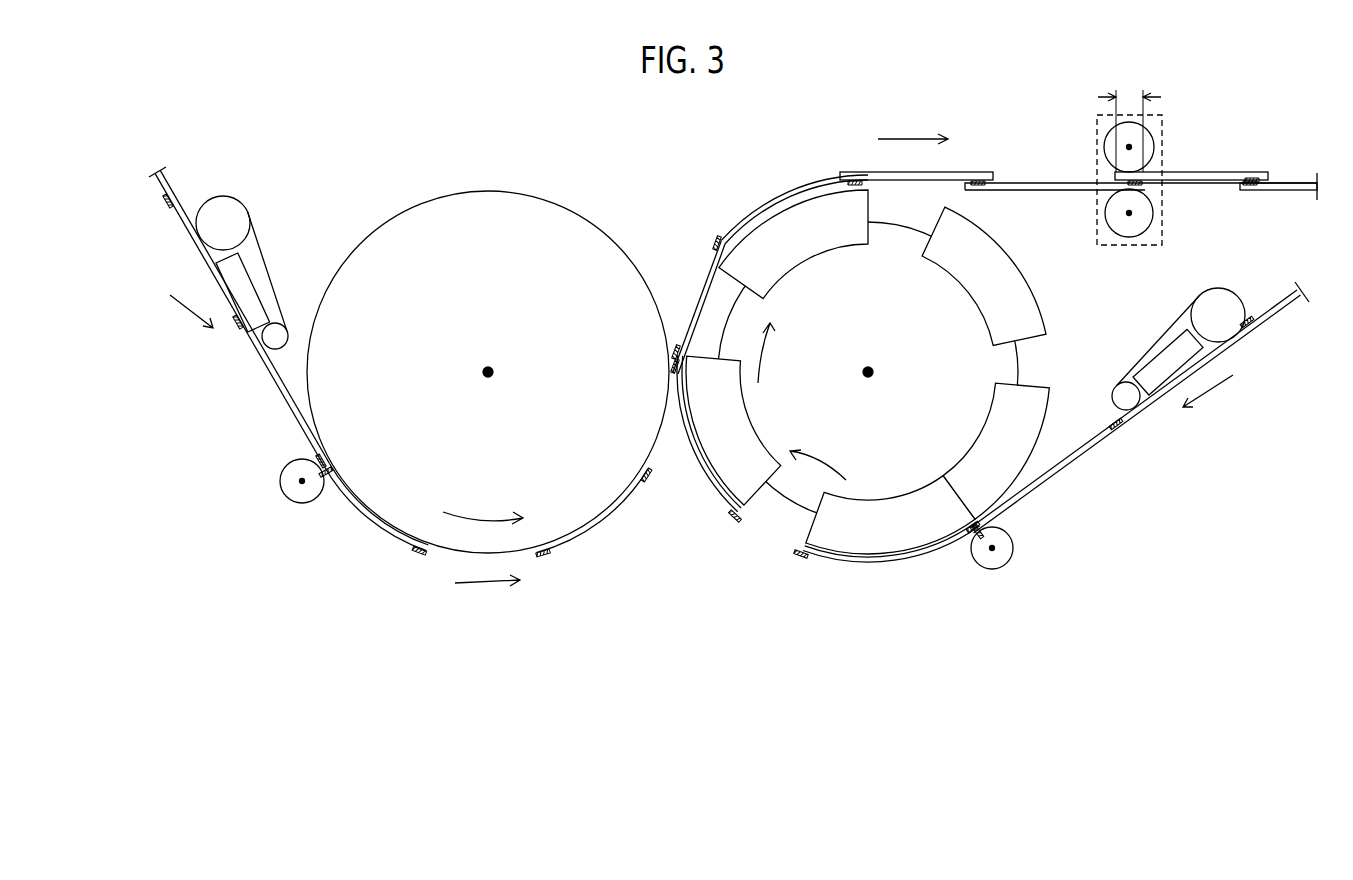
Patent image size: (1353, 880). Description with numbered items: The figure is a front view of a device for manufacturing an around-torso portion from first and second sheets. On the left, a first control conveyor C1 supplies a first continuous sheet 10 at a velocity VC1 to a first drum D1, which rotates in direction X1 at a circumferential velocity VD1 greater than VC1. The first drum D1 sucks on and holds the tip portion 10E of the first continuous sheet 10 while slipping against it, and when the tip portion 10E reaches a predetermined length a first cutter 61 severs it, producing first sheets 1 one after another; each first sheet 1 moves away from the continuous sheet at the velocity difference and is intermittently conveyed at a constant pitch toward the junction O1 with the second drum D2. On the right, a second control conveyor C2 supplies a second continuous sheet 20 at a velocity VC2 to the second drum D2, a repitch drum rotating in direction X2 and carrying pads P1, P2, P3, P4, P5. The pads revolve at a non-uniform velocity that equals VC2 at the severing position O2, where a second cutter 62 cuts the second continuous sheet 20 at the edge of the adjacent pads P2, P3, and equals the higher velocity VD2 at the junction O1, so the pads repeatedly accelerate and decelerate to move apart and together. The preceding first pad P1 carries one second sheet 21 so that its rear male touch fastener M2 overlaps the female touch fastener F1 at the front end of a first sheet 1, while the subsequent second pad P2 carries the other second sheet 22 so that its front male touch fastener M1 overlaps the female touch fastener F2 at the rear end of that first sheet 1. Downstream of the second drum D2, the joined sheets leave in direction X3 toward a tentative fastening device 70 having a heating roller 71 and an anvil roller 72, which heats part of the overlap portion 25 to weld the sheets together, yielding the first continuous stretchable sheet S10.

The first sheet 1 is at (607, 522).
The first continuous sheet 10 is at (287, 405).
The tip portion 10E is at (365, 518).
The first cutter 61 is at (296, 492).
The second cutter 62 is at (1003, 556).
The second continuous sheet 20 is at (1067, 465).
The one second sheet 21 is at (705, 470).
The other second sheet 22 is at (900, 557).
The tentative fastening device 70 is at (1095, 125).
The heating roller 71 is at (1105, 147).
The anvil roller 72 is at (1153, 213).
The overlap portion 25 is at (1130, 90).
The first drum D1 is at (510, 220).
The second drum D2 is at (1020, 367).
The first control conveyor C1 is at (263, 257).
The second control conveyor C2 is at (1167, 330).
The first pad P1 is at (735, 397).
The second pad P2 is at (892, 503).
The pad P3 is at (1002, 405).
The pad P4 is at (982, 300).
The pad P5 is at (810, 252).
The female touch fastener F1 is at (648, 475).
The female touch fastener F2 is at (550, 553).
The male touch fastener M1 is at (812, 557).
The male touch fastener M2 is at (740, 513).
The junction O1 is at (668, 362).
The severing position O2 is at (975, 518).
The first continuous stretchable sheet S10 is at (1234, 138).
The rotation direction of first drum X1 is at (483, 506).
The rotation direction of second drum X2 is at (818, 459).
The conveyance direction X3 is at (913, 126).
The velocity of first control conveyor VC1 is at (187, 312).
The velocity of second control conveyor VC2 is at (1215, 397).
The circumferential velocity of first drum VD1 is at (487, 592).
The velocity of second drum at junction VD2 is at (778, 353).